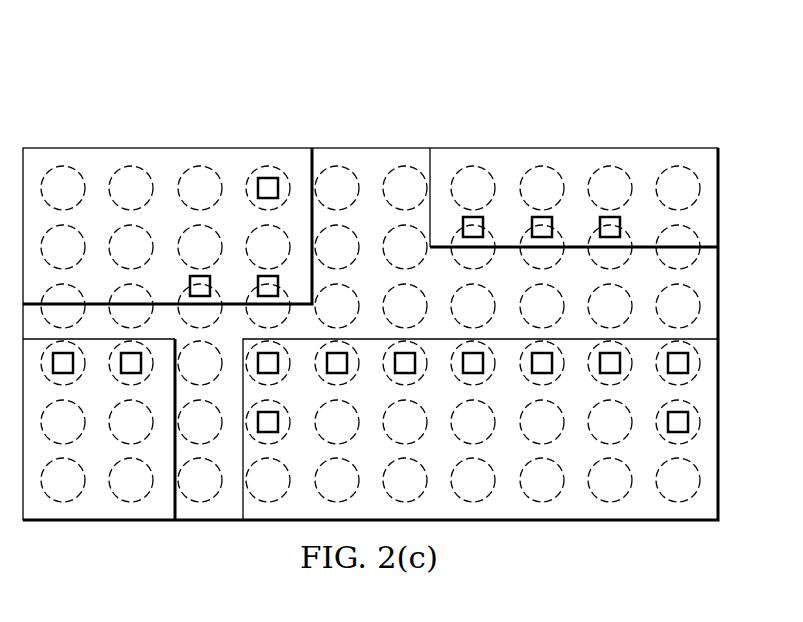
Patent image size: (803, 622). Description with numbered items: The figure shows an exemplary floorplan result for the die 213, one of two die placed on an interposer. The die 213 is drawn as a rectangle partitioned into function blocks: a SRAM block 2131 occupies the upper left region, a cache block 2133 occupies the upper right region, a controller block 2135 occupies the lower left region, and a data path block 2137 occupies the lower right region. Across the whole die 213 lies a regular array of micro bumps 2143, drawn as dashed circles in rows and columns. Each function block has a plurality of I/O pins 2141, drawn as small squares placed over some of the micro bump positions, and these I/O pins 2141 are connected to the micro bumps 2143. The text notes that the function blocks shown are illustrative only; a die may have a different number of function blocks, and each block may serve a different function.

The die 213 is at (218, 109).
The SRAM block 2131 is at (133, 149).
The cache block 2133 is at (642, 157).
The controller block 2135 is at (100, 513).
The data path block 2137 is at (510, 510).
The I/O pins 2141 is at (538, 217).
The micro bumps 2143 is at (680, 503).